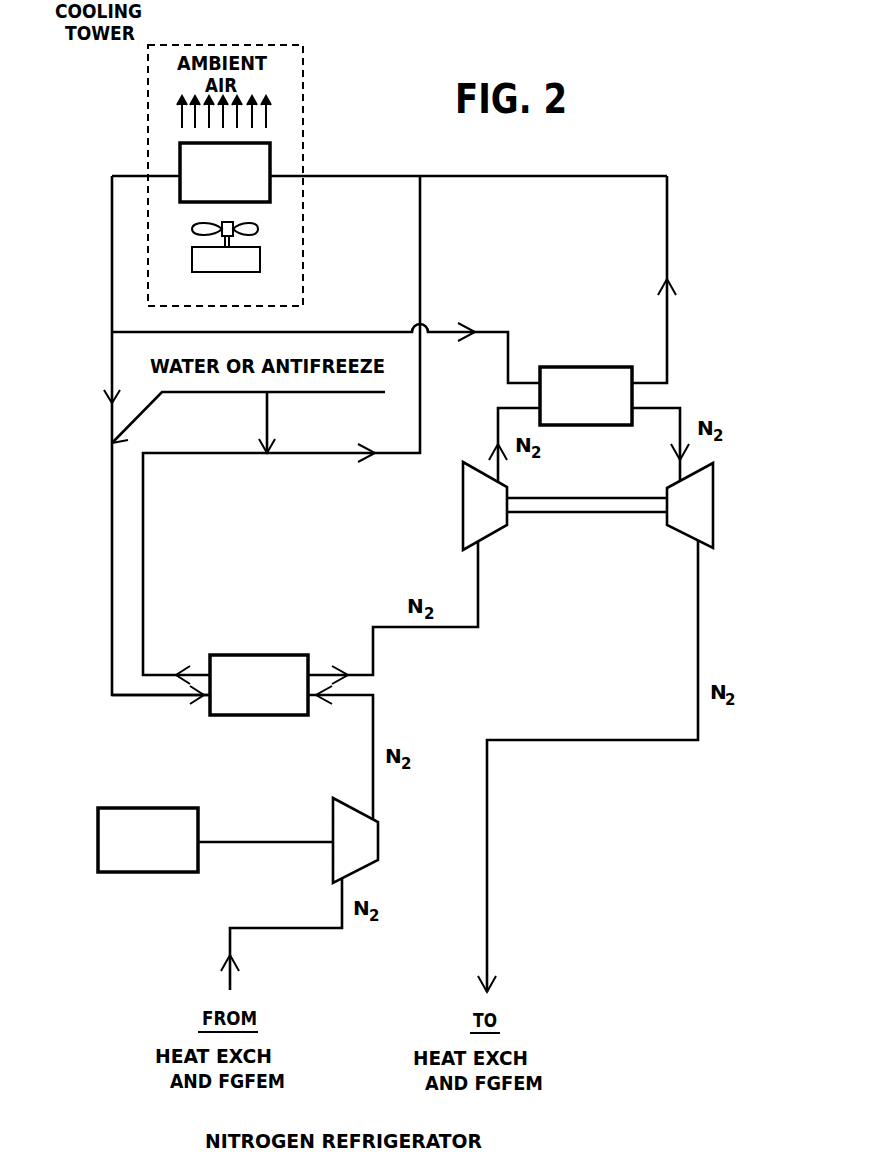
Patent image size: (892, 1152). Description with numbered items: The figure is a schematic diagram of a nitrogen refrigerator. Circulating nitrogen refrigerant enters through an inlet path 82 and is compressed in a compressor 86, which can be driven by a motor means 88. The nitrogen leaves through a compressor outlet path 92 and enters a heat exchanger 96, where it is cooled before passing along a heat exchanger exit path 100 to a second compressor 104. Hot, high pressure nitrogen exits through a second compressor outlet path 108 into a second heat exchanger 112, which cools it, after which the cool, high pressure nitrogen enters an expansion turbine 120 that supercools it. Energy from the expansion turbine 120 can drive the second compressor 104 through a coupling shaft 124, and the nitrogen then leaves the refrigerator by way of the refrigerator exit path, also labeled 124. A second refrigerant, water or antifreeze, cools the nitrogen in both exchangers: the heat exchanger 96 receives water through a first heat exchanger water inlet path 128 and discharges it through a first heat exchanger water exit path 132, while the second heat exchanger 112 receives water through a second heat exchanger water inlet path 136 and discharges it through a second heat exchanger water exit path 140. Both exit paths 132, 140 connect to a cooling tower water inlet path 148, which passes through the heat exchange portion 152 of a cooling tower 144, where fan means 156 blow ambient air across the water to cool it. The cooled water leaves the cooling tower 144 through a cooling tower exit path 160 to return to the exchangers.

The inlet path 82 is at (320, 928).
The compressor 86 is at (378, 835).
The motor means 88 is at (148, 808).
The compressor outlet path 92 is at (373, 725).
The heat exchanger 96 is at (248, 655).
The heat exchanger exit path 100 is at (388, 625).
The second compressor 104 is at (463, 515).
The second compressor outlet path 108 is at (498, 433).
The second heat exchanger 112 is at (595, 425).
The expansion turbine 120 is at (713, 508).
The coupling shaft 124 is at (590, 515).
The first heat exchanger water inlet path 128 is at (127, 700).
The first heat exchanger water exit path 132 is at (143, 575).
The second heat exchanger water inlet path 136 is at (485, 333).
The second heat exchanger water exit path 140 is at (667, 255).
The cooling tower 144 is at (303, 135).
The cooling tower water inlet path 148 is at (352, 176).
The heat exchange portion 152 is at (268, 193).
The fan means 156 is at (260, 260).
The cooling tower exit path 160 is at (112, 298).